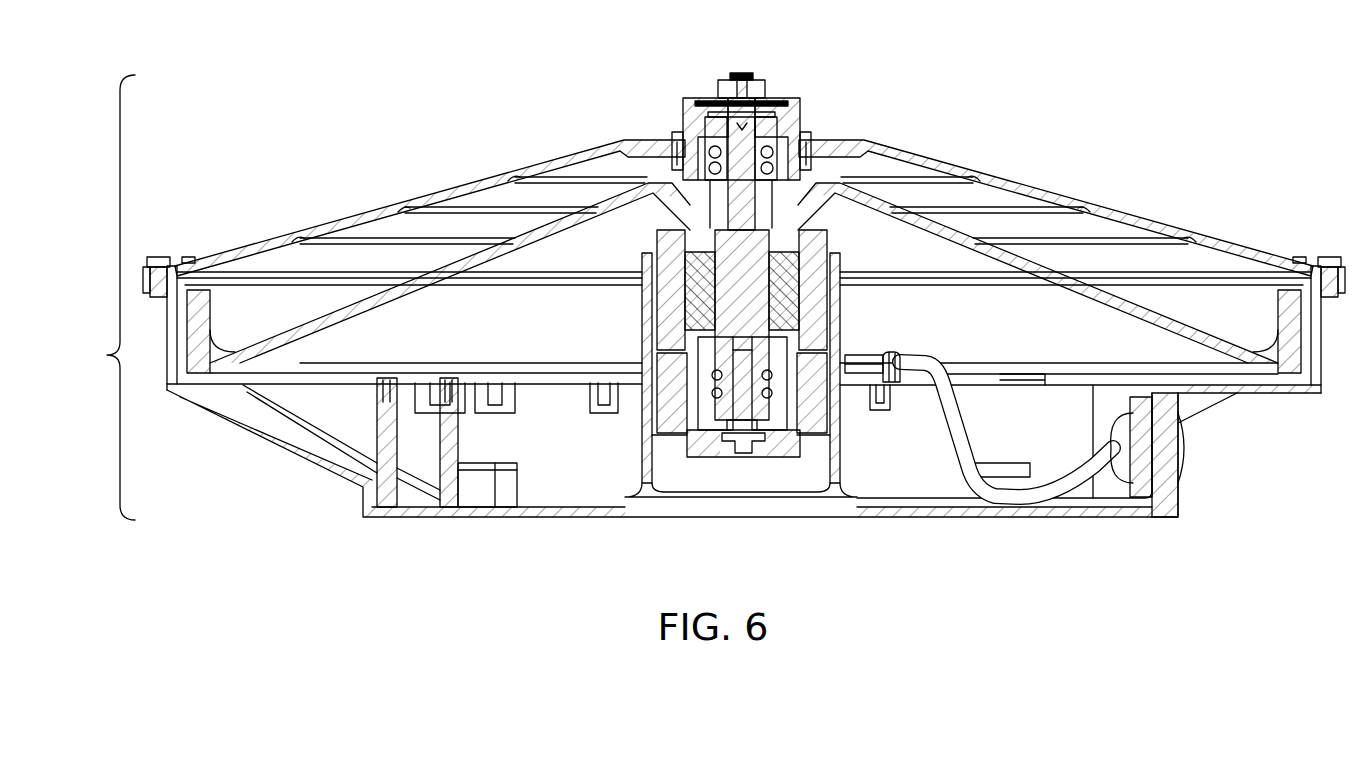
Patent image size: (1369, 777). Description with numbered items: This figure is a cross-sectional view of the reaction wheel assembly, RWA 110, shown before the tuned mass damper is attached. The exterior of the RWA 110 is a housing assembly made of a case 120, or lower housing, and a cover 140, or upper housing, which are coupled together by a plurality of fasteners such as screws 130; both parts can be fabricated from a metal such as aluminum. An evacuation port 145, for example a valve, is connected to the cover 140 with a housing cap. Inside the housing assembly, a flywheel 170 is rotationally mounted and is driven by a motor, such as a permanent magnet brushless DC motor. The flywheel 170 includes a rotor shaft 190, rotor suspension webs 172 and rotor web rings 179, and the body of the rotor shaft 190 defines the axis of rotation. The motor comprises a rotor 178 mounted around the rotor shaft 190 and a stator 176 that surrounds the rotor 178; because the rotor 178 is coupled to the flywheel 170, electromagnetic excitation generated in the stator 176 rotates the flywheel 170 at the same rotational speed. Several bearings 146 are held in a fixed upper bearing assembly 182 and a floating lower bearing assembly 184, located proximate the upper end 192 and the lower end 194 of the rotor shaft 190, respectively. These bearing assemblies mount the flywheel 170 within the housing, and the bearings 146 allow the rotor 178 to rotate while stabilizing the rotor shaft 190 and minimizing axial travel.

The RWA 110 is at (101, 297).
The case 120 is at (1165, 491).
The screws 130 is at (157, 257).
The cover 140 is at (856, 140).
The evacuation port 145 is at (742, 73).
The bearings 146 is at (712, 152).
The flywheel 170 is at (208, 312).
The rotor suspension webs 172 is at (400, 290).
The stator 176 is at (668, 262).
The rotor 178 is at (700, 288).
The rotor web rings 179 is at (1280, 312).
The fixed upper bearing assembly 182 is at (771, 163).
The floating lower bearing assembly 184 is at (782, 406).
The rotor shaft 190 is at (735, 309).
The upper end 192 is at (743, 138).
The lower end 194 is at (746, 378).